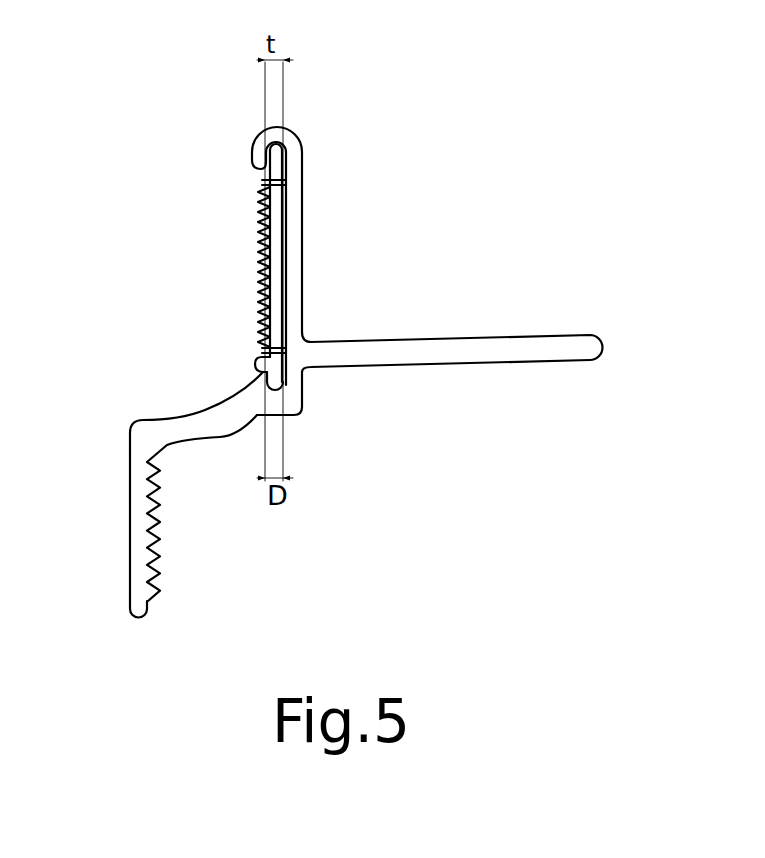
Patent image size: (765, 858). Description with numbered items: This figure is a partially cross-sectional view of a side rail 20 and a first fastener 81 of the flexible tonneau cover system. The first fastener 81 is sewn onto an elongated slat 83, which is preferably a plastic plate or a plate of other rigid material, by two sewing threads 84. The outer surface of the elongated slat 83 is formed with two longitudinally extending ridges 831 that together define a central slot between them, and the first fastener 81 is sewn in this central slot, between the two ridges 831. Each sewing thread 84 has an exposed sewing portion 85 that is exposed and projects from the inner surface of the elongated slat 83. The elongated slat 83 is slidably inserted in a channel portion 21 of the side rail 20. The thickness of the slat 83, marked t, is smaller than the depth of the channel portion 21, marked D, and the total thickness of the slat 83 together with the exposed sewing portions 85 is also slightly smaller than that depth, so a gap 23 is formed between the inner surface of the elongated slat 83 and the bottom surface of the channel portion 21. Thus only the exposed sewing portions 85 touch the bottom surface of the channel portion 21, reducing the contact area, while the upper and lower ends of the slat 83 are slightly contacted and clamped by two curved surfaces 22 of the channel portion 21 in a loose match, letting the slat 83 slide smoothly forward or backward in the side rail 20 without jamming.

The side rail 20 is at (567, 342).
The channel portion 21 is at (286, 258).
The curved surface 22 is at (286, 395).
The gap 23 is at (288, 277).
The first fastener 81 is at (260, 264).
The elongated slat 83 is at (272, 209).
The longitudinally extending ridge 831 is at (256, 362).
The sewing thread 84 is at (264, 183).
The exposed sewing portion 85 is at (264, 182).